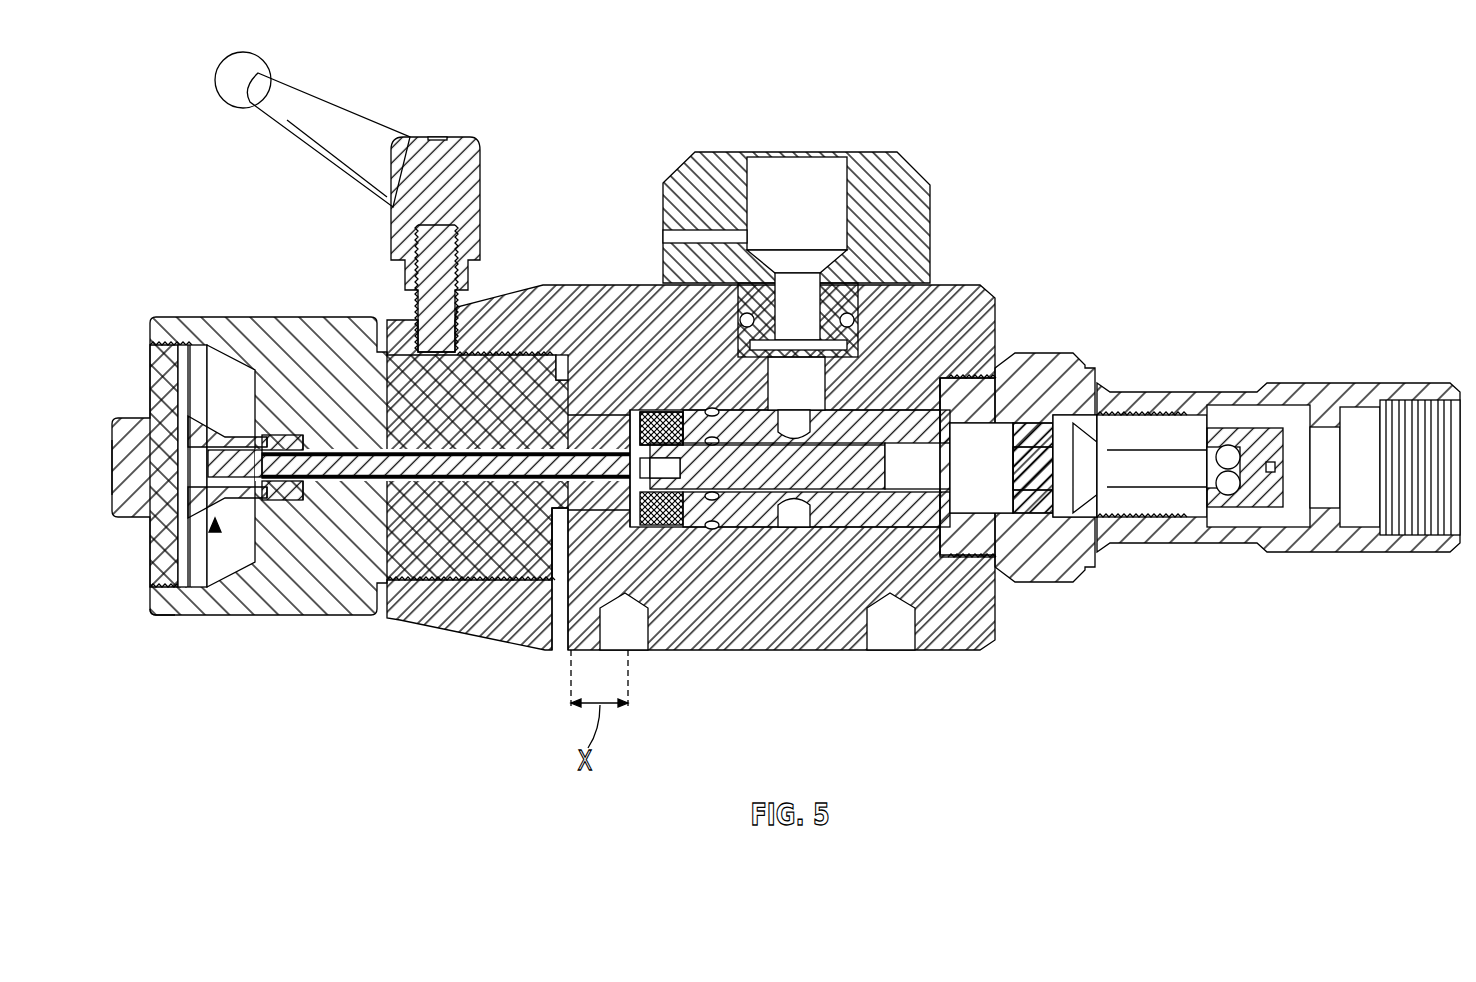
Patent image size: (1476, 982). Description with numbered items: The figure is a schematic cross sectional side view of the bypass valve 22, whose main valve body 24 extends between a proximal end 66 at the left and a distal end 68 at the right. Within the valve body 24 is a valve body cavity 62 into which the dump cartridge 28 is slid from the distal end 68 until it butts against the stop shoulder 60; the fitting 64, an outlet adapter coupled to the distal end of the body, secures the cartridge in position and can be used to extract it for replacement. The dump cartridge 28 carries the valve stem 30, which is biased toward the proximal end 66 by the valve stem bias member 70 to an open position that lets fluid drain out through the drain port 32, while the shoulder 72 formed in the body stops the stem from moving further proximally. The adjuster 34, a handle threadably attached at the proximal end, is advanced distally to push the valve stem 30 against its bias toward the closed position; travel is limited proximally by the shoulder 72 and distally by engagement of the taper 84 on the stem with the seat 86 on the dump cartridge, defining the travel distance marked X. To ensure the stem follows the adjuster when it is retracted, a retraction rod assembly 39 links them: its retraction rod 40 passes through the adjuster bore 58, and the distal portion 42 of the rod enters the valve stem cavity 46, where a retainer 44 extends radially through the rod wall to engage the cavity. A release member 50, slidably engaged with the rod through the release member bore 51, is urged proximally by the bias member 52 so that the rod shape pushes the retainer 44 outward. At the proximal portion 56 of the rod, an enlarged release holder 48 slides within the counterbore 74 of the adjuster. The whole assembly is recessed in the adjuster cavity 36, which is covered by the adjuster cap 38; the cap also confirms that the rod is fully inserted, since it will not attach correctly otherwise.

The bypass valve 22 is at (1257, 168).
The main valve body 24 is at (610, 285).
The dump cartridge 28 is at (765, 540).
The valve stem 30 is at (630, 400).
The drain port 32 is at (935, 480).
The adjuster 34 is at (262, 317).
The adjuster cavity 36 is at (222, 390).
The adjuster cap 38 is at (157, 567).
The retraction rod assembly 39 is at (166, 615).
The retraction rod 40 is at (440, 482).
The distal portion of the retraction rod 42 is at (650, 453).
The retainer 44 is at (652, 520).
The valve stem cavity 46 is at (693, 527).
The release holder 48 is at (210, 560).
The release member 50 is at (188, 505).
The release member bore 51 is at (300, 507).
The bias member 52 is at (245, 510).
The proximal portion of the retraction rod 56 is at (190, 433).
The adjuster bore 58 is at (368, 482).
The stop shoulder 60 is at (668, 410).
The valve body cavity 62 is at (898, 523).
The fitting 64 is at (1047, 353).
The proximal end 66 is at (150, 332).
The distal end 68 is at (997, 593).
The valve stem bias member 70 is at (660, 412).
The shoulder 72 is at (635, 450).
The counterbore 74 is at (268, 500).
The taper 84 is at (877, 608).
The seat 86 is at (799, 410).